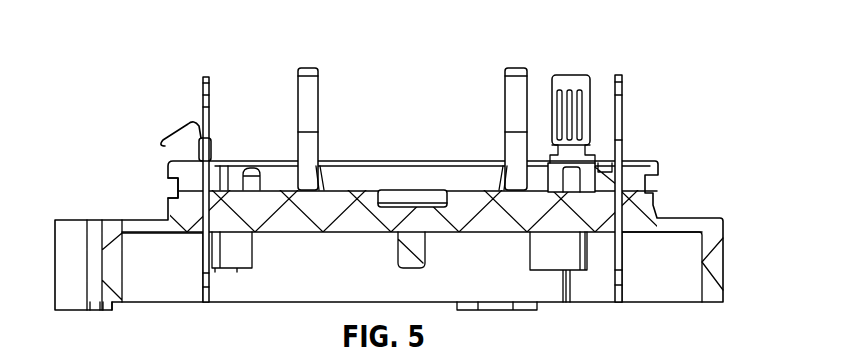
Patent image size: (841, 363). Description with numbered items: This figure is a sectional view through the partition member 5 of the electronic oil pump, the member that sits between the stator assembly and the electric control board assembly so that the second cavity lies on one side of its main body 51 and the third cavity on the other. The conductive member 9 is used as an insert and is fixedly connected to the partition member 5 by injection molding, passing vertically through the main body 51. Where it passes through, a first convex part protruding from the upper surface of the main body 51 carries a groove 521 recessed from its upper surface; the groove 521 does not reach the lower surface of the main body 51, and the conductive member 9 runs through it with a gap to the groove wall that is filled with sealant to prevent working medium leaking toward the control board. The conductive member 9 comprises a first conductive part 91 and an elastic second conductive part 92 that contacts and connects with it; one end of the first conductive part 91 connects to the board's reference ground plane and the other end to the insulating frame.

The partition member 5 is at (675, 191).
The main body 51 is at (333, 205).
The groove 521 is at (190, 167).
The conductive member 9 is at (119, 151).
The first conductive part 91 is at (203, 112).
The second conductive part 92 is at (175, 125).